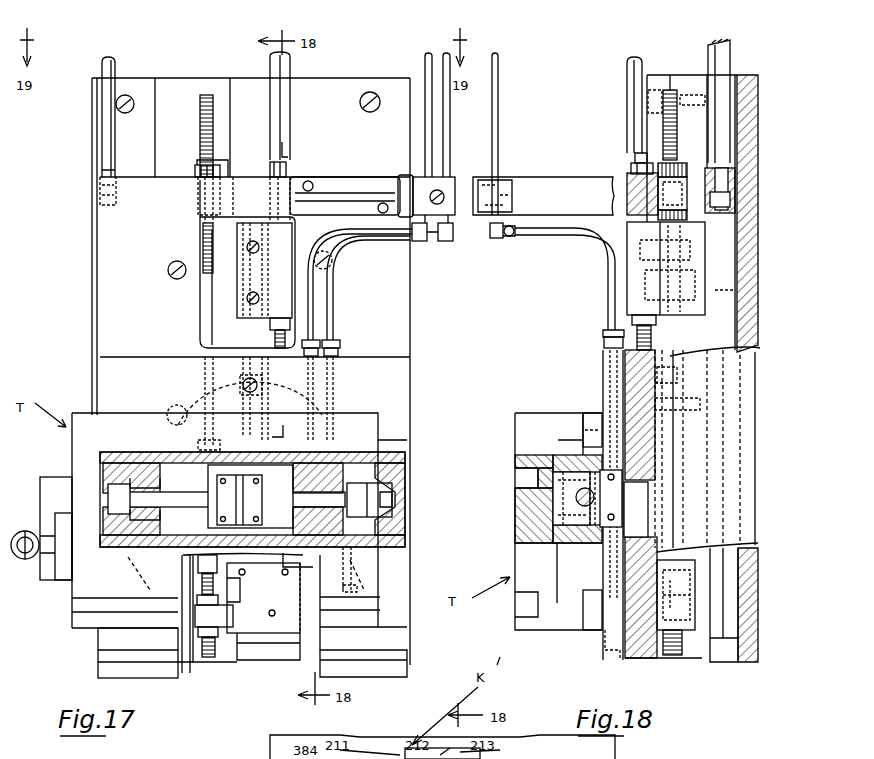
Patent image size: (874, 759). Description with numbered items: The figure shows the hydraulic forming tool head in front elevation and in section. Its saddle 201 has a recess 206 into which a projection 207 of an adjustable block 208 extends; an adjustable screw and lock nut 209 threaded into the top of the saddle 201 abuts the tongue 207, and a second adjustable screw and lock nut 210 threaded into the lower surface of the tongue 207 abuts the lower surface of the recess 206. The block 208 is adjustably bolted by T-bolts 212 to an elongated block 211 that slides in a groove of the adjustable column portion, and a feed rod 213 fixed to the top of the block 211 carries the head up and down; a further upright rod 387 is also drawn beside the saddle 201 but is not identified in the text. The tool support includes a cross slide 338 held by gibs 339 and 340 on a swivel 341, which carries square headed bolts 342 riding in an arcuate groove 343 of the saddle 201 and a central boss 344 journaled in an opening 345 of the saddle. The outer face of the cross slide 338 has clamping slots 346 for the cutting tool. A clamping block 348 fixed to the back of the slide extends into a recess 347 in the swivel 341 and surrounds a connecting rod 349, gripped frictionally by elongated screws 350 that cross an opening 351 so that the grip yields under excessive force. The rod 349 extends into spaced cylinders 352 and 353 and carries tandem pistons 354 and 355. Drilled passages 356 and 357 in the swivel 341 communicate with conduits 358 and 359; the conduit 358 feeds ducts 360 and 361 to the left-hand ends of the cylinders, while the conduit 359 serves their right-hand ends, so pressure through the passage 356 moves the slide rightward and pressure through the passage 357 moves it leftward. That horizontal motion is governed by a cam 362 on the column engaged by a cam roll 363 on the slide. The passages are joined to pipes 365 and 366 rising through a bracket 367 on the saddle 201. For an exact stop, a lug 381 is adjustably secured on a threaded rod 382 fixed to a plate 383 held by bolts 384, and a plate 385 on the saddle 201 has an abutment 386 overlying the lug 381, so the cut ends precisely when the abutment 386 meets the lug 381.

In FIG. 17, the saddle 201 is at (112, 262).
In FIG. 18, the saddle 201 is at (630, 363).
In FIG. 17, the recess 206 is at (202, 330).
In FIG. 18, the recess 206 is at (622, 334).
In FIG. 17, the projection 207 is at (268, 272).
In FIG. 18, the projection 207 is at (632, 240).
In FIG. 17, the adjustable block 208 is at (283, 223).
In FIG. 18, the adjustable block 208 is at (692, 308).
In FIG. 17, the adjustable screw and lock nut 209 is at (272, 162).
In FIG. 18, the adjustable screw and lock nut 209 is at (628, 166).
In FIG. 17, the adjustable screw and lock nut 210 is at (288, 330).
In FIG. 18, the adjustable screw and lock nut 210 is at (636, 330).
In FIG. 18, the elongated block 211 is at (740, 337).
In FIG. 18, the T-bolts 212 is at (738, 293).
In FIG. 17, the feed rod 213 is at (286, 113).
In FIG. 18, the feed rod 213 is at (715, 112).
In FIG. 17, the cross slide 338 is at (73, 592).
In FIG. 18, the cross slide 338 is at (515, 450).
In FIG. 18, the gib 339 is at (590, 413).
In FIG. 18, the gib 340 is at (590, 630).
In FIG. 17, the swivel 341 is at (410, 392).
In FIG. 18, the swivel 341 is at (604, 395).
In FIG. 17, the square headed bolts 342 is at (254, 392).
In FIG. 18, the square headed bolts 342 is at (668, 392).
In FIG. 18, the arcuate groove 343 is at (665, 378).
In FIG. 18, the boss 344 is at (640, 492).
In FIG. 18, the opening 345 is at (650, 535).
In FIG. 18, the clamping slots 346 is at (514, 478).
In FIG. 17, the recess 347 is at (272, 470).
In FIG. 18, the recess 347 is at (558, 540).
In FIG. 17, the clamping block 348 is at (220, 480).
In FIG. 18, the clamping block 348 is at (514, 503).
In FIG. 17, the connecting rod 349 is at (182, 510).
In FIG. 18, the connecting rod 349 is at (583, 495).
In FIG. 18, the elongated screws 350 is at (517, 518).
In FIG. 18, the opening 351 is at (587, 530).
In FIG. 17, the cylinder 352 is at (395, 500).
In FIG. 17, the cylinder 353 is at (145, 480).
In FIG. 17, the piston 354 is at (400, 530).
In FIG. 17, the piston 355 is at (130, 485).
In FIG. 17, the drilled passage 356 is at (330, 366).
In FIG. 17, the drilled passage 357 is at (333, 383).
In FIG. 17, the conduit 358 is at (376, 548).
In FIG. 17, the conduit 359 is at (380, 452).
In FIG. 17, the duct 360 is at (118, 540).
In FIG. 17, the duct 361 is at (362, 548).
In FIG. 17, the cam 362 is at (42, 500).
In FIG. 17, the cam roll 363 is at (25, 560).
In FIG. 17, the pipe 365 is at (423, 148).
In FIG. 17, the pipe 366 is at (449, 150).
In FIG. 18, the pipe 366 is at (499, 152).
In FIG. 17, the bracket 367 is at (455, 223).
In FIG. 18, the bracket 367 is at (523, 222).
In FIG. 17, the lug 381 is at (222, 630).
In FIG. 17, the threaded rod 382 is at (208, 108).
In FIG. 18, the threaded rod 382 is at (663, 117).
In FIG. 17, the plate 383 is at (206, 165).
In FIG. 18, the plate 383 is at (628, 195).
In FIG. 18, the bolts 384 is at (700, 150).
In FIG. 17, the plate 385 is at (305, 623).
In FIG. 18, the plate 385 is at (690, 650).
In FIG. 17, the abutment 386 is at (238, 583).
In FIG. 17, the guide rod 387 is at (104, 160).
In FIG. 18, the guide rod 387 is at (630, 90).